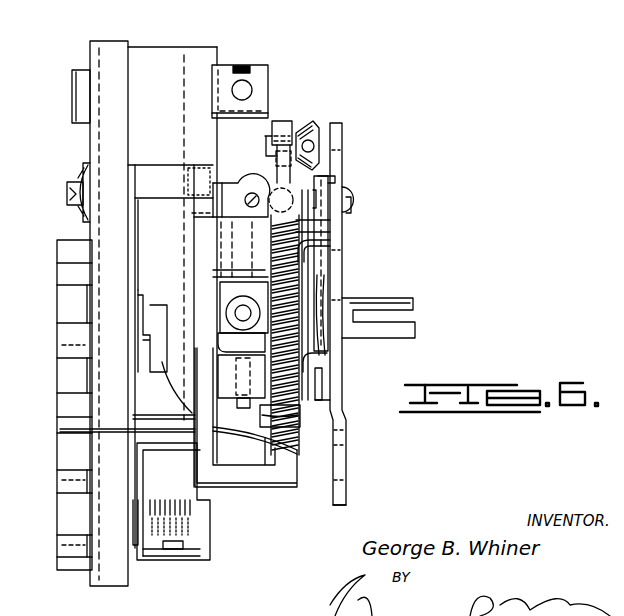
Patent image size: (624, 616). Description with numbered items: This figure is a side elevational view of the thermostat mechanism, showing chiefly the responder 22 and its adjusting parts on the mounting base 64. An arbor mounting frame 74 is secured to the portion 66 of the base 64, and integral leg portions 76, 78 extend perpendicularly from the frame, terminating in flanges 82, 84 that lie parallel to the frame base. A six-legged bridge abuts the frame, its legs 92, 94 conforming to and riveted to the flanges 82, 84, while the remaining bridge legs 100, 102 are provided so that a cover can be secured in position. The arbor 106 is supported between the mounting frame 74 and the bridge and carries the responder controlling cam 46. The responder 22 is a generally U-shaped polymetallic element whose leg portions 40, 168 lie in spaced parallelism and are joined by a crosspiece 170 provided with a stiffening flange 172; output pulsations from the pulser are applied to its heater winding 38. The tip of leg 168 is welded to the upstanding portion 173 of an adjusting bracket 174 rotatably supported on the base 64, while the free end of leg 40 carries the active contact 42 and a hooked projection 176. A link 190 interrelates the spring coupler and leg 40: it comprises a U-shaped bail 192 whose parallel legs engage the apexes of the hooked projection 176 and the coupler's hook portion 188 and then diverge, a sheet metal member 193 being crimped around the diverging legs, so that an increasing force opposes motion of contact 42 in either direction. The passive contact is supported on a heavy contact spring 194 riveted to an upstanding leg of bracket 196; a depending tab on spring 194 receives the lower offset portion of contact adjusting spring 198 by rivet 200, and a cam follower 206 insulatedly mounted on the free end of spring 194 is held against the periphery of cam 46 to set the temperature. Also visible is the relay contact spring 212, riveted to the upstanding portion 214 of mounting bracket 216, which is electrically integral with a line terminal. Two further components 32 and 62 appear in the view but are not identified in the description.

The responder 22 is at (314, 273).
The bracket 32 is at (145, 307).
The heater winding 38 is at (287, 290).
The polymetallic leg portion 40 is at (334, 224).
The active contact 42 is at (293, 198).
The responder controlling cam 46 is at (212, 247).
The rack 62 is at (137, 518).
The mounting base 64 is at (100, 146).
The base portion 66 is at (211, 45).
The arbor mounting frame 74 is at (218, 335).
The leg portion 76 is at (312, 245).
The leg portion 78 is at (312, 362).
The flange 82 is at (344, 190).
The flange 84 is at (324, 378).
The bridge leg 92 is at (345, 208).
The bridge leg 94 is at (338, 393).
The bridge leg 100 is at (342, 128).
The bridge leg 102 is at (340, 490).
The arbor 106 is at (416, 303).
The leg portion 168 is at (204, 270).
The crosspiece 170 is at (237, 472).
The stiffening flange 172 is at (277, 488).
The upstanding portion 173 is at (145, 167).
The adjusting bracket 174 is at (142, 233).
The hooked projection 176 is at (283, 173).
The hook portion 188 is at (282, 121).
The link 190 is at (261, 152).
The U-shaped bail 192 is at (259, 140).
The sheet metal member 193 is at (322, 130).
The contact spring 194 is at (258, 118).
The bracket 196 is at (223, 80).
The contact adjusting spring 198 is at (330, 155).
The rivet 200 is at (192, 220).
The cam follower 206 is at (245, 313).
The contact spring 212 is at (156, 560).
The upstanding portion 214 is at (145, 560).
The mounting bracket 216 is at (134, 543).